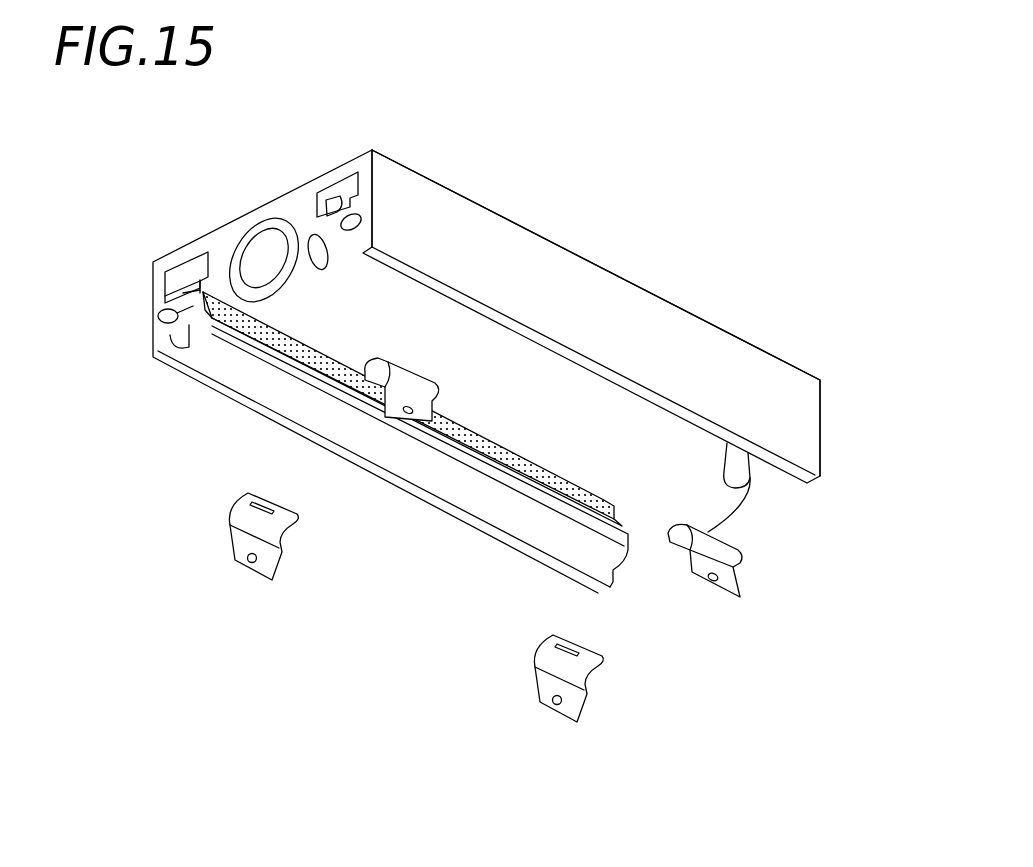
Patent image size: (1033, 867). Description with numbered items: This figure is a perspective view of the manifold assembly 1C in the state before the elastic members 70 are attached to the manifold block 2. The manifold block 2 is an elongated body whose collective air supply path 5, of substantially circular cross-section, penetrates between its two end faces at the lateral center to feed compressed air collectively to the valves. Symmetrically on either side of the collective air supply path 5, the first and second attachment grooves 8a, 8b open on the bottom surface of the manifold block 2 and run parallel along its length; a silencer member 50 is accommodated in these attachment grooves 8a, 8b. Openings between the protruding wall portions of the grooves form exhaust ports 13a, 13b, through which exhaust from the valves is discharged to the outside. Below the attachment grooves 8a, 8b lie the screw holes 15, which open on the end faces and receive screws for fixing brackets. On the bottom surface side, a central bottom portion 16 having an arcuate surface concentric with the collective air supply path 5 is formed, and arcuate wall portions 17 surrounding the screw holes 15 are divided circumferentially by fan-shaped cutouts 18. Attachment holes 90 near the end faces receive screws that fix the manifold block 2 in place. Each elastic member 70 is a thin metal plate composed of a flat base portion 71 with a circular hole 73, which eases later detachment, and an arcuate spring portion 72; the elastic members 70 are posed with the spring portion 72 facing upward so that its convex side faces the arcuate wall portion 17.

The lighting device 1C is at (645, 172).
The manifold block 2 is at (458, 205).
The collective air supply path 5 is at (273, 248).
The first attachment groove 8a is at (180, 258).
The second attachment groove 8b is at (339, 175).
The exhaust port 13a is at (194, 290).
The exhaust port 13b is at (332, 226).
The screw hole 15 is at (159, 318).
The central bottom portion 16 is at (582, 447).
The arcuate wall portion 17 is at (186, 340).
The fan-shaped cutout 18 is at (183, 296).
The silencer member 50 is at (300, 350).
The elastic member 70 is at (451, 540).
The base portion 71 is at (276, 578).
The spring portion 72 is at (235, 505).
The hole 73 is at (298, 565).
The attachment hole 90 is at (316, 245).